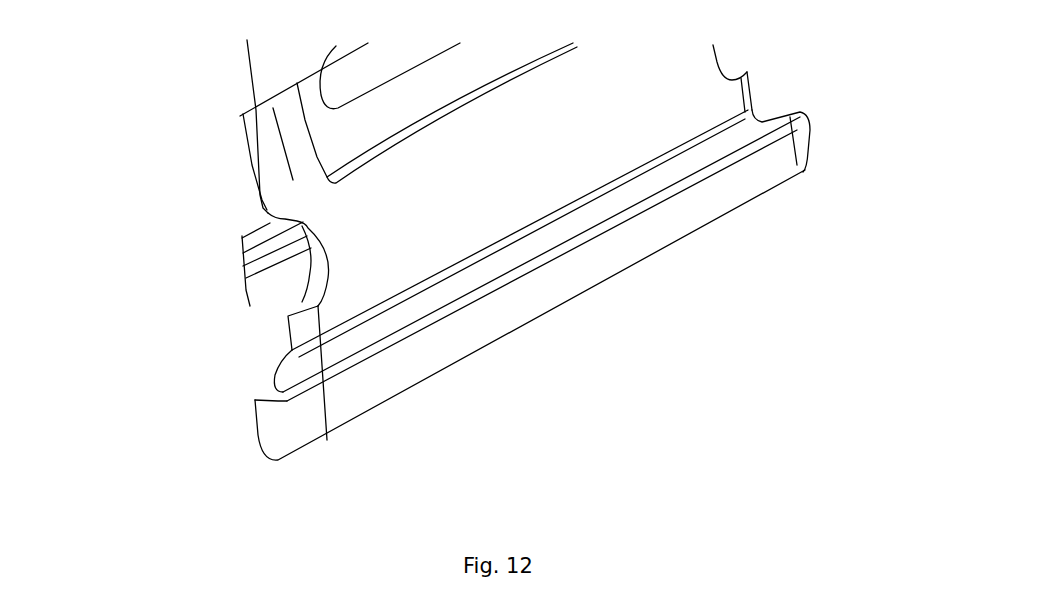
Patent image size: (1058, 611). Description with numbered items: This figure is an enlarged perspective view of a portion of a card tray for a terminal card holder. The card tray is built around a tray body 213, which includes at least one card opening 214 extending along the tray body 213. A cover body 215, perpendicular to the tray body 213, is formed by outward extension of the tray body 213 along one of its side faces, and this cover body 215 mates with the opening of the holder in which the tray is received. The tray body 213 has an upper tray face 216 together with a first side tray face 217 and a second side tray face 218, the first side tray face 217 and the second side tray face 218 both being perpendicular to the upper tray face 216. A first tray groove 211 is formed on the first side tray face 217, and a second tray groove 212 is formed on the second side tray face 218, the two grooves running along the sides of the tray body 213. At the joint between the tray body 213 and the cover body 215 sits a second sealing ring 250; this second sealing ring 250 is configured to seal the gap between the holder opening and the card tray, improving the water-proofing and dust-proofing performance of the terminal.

The first tray groove 211 is at (718, 62).
The second tray groove 212 is at (308, 285).
The tray body 213 is at (272, 165).
The card opening 214 is at (363, 133).
The cover body 215 is at (597, 265).
The upper tray face 216 is at (702, 138).
The first side tray face 217 is at (748, 100).
The second side tray face 218 is at (288, 343).
The second sealing ring 250 is at (290, 378).